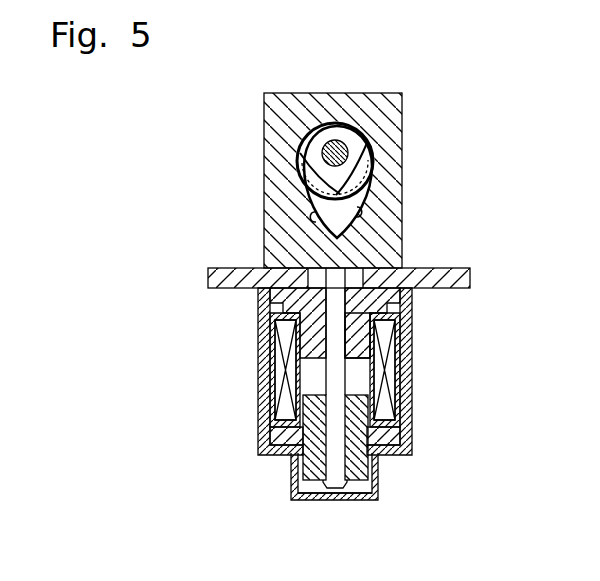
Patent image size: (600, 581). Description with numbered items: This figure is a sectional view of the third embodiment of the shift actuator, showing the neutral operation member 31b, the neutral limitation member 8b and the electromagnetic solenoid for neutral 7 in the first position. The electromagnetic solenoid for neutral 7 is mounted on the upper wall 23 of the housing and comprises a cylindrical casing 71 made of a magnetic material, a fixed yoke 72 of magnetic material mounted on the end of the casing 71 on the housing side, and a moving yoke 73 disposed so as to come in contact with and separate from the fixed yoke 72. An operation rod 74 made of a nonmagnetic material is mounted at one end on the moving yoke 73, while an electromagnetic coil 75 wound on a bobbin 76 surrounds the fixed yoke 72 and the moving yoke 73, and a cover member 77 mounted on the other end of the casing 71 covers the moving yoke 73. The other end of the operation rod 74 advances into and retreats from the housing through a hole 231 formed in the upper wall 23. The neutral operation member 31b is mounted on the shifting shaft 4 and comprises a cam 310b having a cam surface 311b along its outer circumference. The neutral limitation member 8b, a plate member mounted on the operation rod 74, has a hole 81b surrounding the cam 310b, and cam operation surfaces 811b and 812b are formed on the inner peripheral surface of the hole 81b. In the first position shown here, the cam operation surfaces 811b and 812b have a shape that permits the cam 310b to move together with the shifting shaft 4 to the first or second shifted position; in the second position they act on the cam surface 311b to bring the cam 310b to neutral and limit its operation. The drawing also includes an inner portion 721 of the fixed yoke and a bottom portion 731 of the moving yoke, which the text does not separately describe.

The electromagnetic solenoid for neutral 7 is at (459, 460).
The cylindrical casing 71 is at (412, 375).
The fixed yoke 72 is at (370, 301).
The inner portion of fixed core 721 is at (346, 342).
The moving yoke 73 is at (352, 412).
The bottom cup portion 731 is at (367, 460).
The operation rod 74 is at (335, 322).
The electromagnetic coil 75 is at (283, 402).
The bobbin 76 is at (297, 372).
The cover member 77 is at (303, 502).
The upper wall 23 is at (238, 278).
The hole 231 is at (355, 268).
The neutral limitation member 8b is at (395, 110).
The hole 81b is at (365, 197).
The cam operation surface 811b is at (313, 220).
The cam operation surface 812b is at (367, 208).
The shifting shaft 4 is at (348, 147).
The neutral operation member 31b is at (298, 130).
The cam 310b is at (298, 148).
The cam surface 311b is at (306, 188).